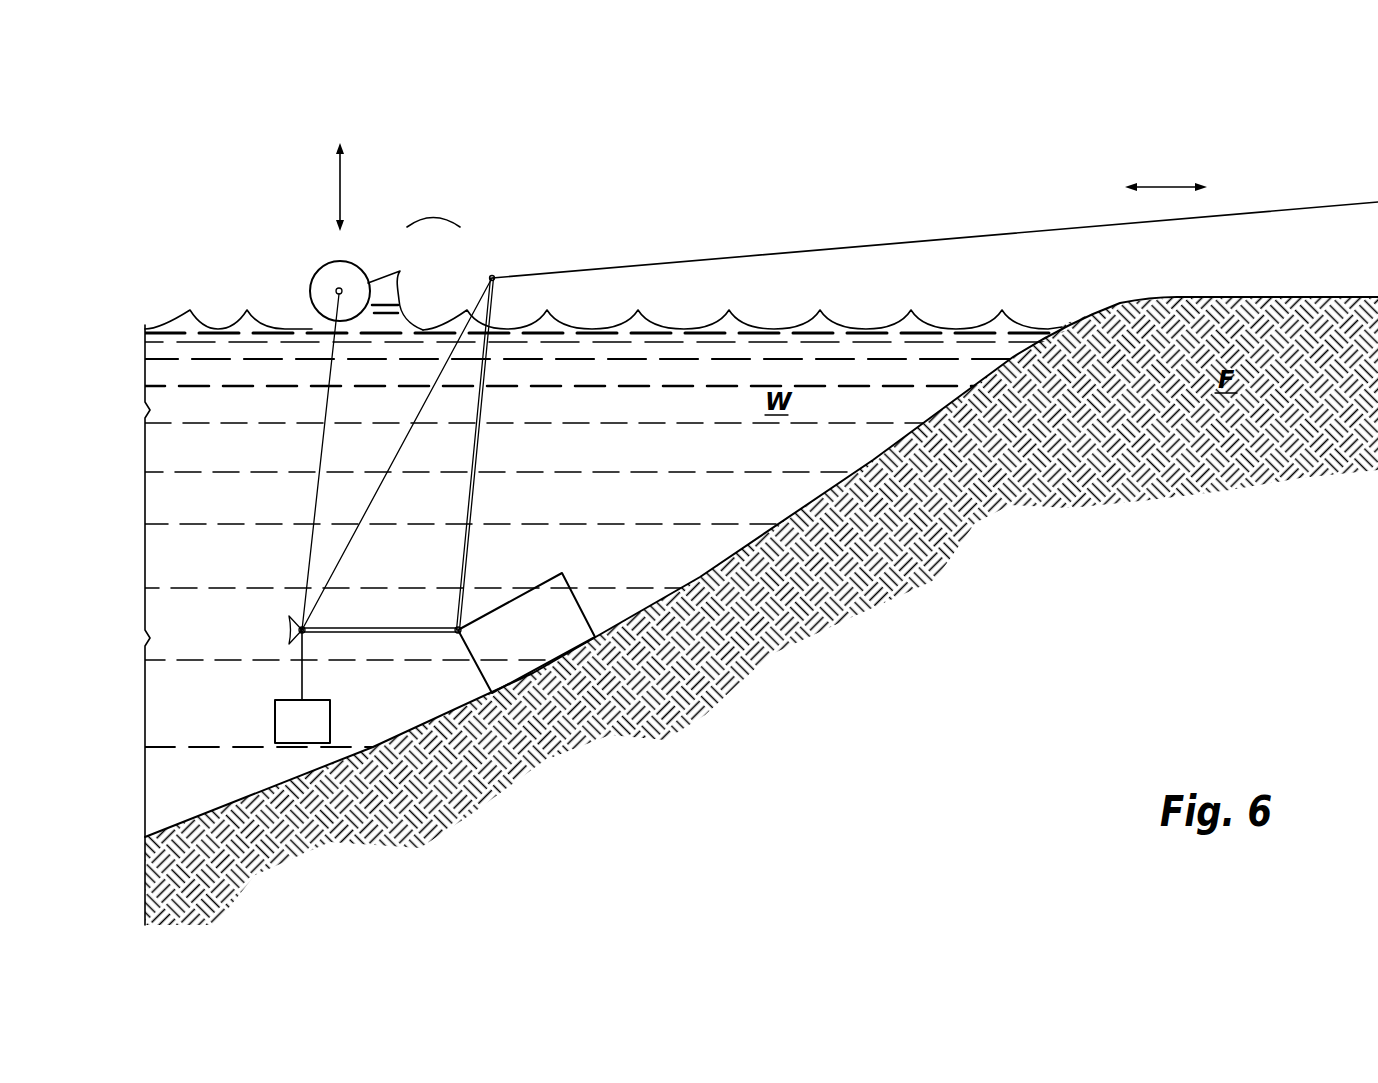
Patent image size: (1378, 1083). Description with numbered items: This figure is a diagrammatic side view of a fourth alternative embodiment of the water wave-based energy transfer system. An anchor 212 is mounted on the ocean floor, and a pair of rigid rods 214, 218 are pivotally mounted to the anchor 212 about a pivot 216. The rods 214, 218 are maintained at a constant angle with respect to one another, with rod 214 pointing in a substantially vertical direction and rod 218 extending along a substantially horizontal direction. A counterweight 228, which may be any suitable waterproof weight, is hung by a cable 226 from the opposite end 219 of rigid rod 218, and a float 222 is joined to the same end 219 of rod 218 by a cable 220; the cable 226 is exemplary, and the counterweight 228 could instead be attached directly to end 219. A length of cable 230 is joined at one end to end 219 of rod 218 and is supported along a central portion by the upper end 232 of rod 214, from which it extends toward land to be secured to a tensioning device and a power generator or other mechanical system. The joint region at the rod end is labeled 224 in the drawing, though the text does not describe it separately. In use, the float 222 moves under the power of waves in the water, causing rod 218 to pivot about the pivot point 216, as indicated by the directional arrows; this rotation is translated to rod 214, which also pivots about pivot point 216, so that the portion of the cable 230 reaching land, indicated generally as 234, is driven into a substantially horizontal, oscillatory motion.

The anchor 212 is at (564, 574).
The rigid rod 214 is at (480, 440).
The pivot 216 is at (457, 635).
The rigid rod 218 is at (378, 627).
The end of rigid rod 219 is at (303, 633).
The cable 220 is at (317, 492).
The float 222 is at (318, 271).
The pivot joint 224 is at (290, 630).
The cable 226 is at (302, 677).
The counterweight 228 is at (276, 724).
The cable 230 is at (870, 246).
The upper end of rod 232 is at (492, 278).
The portion of cable reaching land 234 is at (920, 138).